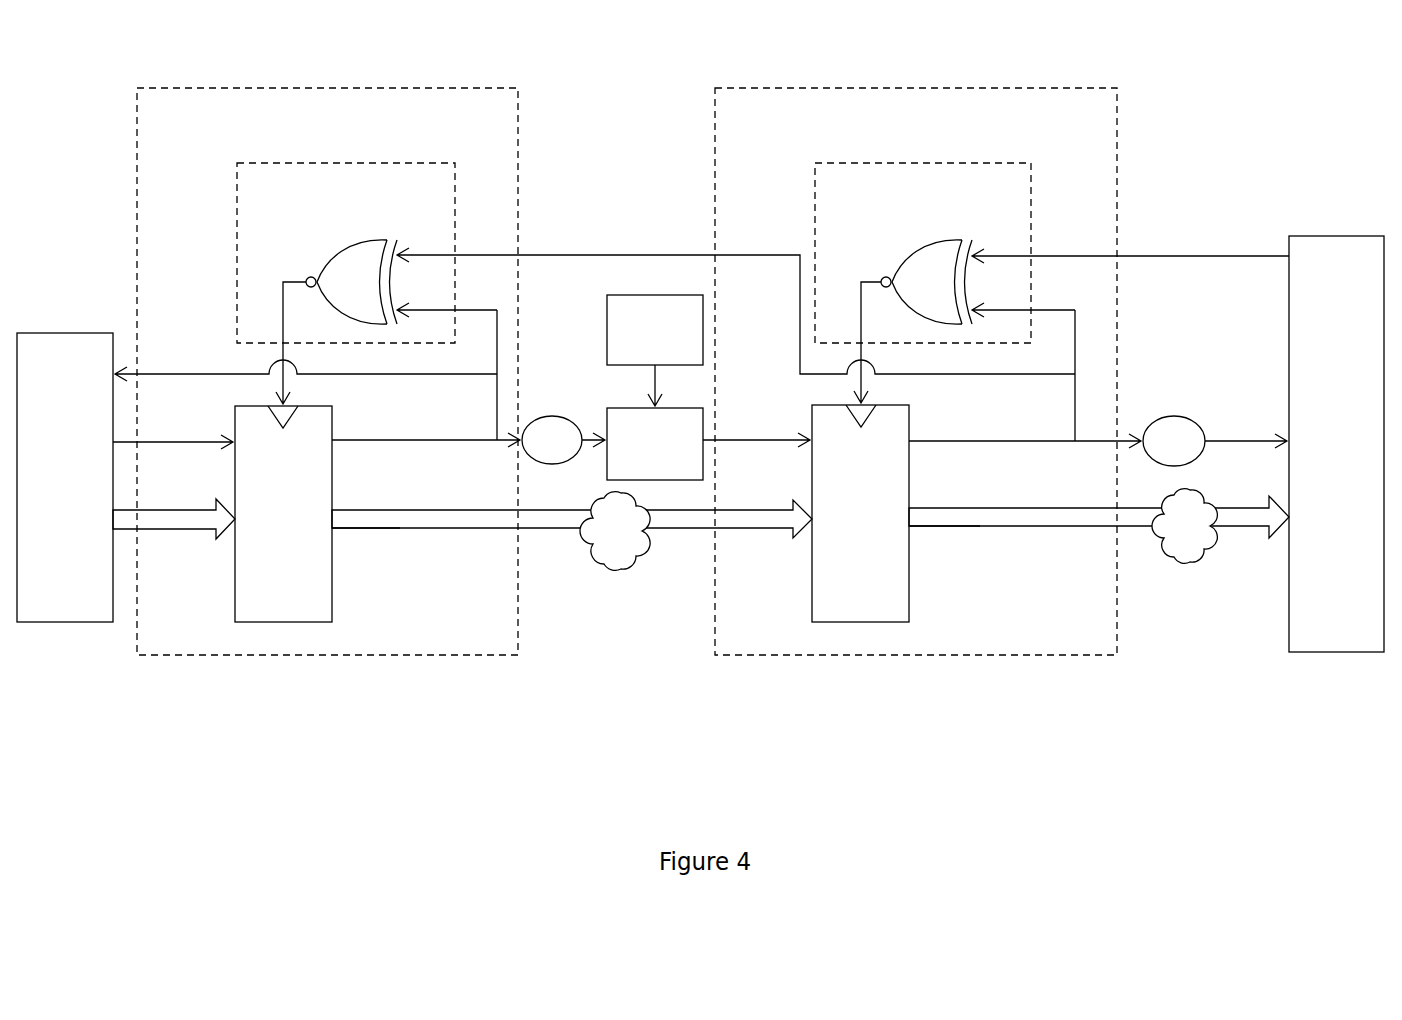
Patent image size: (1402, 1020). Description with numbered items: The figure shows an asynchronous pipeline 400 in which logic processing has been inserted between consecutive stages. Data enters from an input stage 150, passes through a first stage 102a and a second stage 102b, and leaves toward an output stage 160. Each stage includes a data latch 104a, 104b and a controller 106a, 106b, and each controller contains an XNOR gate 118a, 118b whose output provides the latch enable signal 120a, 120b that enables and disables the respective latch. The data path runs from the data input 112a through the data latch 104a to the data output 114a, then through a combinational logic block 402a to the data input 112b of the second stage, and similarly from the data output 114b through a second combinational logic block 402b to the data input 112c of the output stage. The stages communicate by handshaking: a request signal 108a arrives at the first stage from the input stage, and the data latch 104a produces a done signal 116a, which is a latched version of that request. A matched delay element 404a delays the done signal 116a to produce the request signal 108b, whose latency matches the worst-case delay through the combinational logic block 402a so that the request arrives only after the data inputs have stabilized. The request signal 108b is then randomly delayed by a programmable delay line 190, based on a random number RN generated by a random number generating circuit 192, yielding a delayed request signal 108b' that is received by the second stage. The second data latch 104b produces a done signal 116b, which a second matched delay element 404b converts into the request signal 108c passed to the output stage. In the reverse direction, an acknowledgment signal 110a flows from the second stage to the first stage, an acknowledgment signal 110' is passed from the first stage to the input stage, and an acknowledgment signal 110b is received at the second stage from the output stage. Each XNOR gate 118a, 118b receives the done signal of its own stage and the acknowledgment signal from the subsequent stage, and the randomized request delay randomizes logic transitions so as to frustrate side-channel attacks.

The asynchronous pipeline 400 is at (1249, 160).
The first stage 102a is at (330, 657).
The second stage 102b is at (906, 657).
The data latch 104a is at (255, 530).
The data latch 104b is at (833, 530).
The controller 106a is at (291, 163).
The controller 106b is at (870, 163).
The request signal 108a is at (176, 444).
The request signal 108b is at (576, 412).
The delayed request signal 108b' is at (756, 473).
The request signal 108c is at (1247, 437).
The acknowledgment signal 110' is at (306, 344).
The acknowledgment signal 110a is at (760, 254).
The acknowledgment signal 110b is at (1137, 255).
The data input 112a is at (172, 532).
The data input 112b is at (750, 530).
The data input 112c is at (1240, 528).
The data output 114a is at (366, 531).
The data output 114b is at (942, 530).
The done signal 116a is at (366, 443).
The done signal 116b is at (939, 443).
The XNOR gate 118a is at (362, 258).
The XNOR gate 118b is at (940, 258).
The latch enable signal 120a is at (282, 279).
The latch enable signal 120b is at (861, 279).
The input stage 150 is at (44, 485).
The output stage 160 is at (1316, 442).
The programmable delay line 190 is at (634, 457).
The random number generating circuit 192 is at (634, 345).
The random number RN is at (674, 385).
The combinational logic block 402a is at (622, 582).
The combinational logic block 402b is at (1190, 574).
The matched delay element 404a is at (526, 453).
The matched delay element 404b is at (1148, 454).